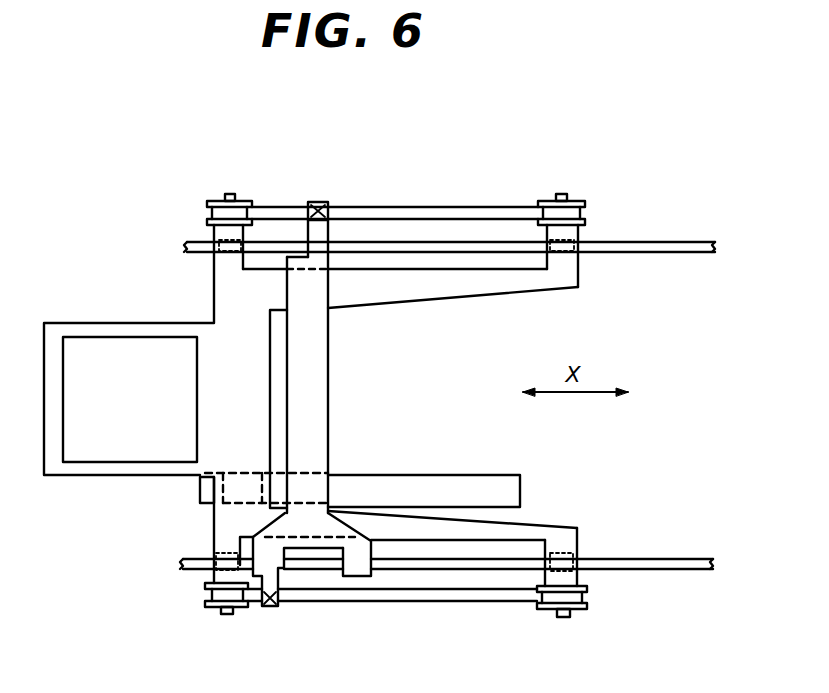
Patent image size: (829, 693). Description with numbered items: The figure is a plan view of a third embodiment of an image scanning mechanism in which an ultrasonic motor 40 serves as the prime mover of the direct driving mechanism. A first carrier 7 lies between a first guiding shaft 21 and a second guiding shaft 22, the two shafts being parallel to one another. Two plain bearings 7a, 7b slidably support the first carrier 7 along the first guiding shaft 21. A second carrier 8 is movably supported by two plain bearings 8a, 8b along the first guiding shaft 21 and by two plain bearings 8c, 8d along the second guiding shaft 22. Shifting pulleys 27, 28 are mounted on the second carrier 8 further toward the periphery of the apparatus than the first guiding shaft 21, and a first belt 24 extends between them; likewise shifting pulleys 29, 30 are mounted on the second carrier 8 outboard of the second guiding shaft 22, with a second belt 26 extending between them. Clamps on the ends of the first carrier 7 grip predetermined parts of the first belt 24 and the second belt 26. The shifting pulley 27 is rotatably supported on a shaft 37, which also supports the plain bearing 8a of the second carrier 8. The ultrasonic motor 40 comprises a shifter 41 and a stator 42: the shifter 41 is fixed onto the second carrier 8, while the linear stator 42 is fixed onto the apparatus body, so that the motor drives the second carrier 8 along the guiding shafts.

The first carrier 7 is at (331, 342).
The plain bearing 7a is at (276, 566).
The plain bearing 7b is at (358, 566).
The second carrier 8 is at (105, 324).
The plain bearing 8a is at (212, 553).
The plain bearing 8b is at (580, 551).
The plain bearing 8c is at (205, 236).
The plain bearing 8d is at (590, 236).
The first guiding shaft 21 is at (690, 558).
The second guiding shaft 22 is at (687, 244).
The first belt 24 is at (453, 603).
The second belt 26 is at (402, 206).
The shifting pulley 27 is at (208, 609).
The shifting pulley 28 is at (545, 611).
The shifting pulley 29 is at (241, 198).
The shifting pulley 30 is at (573, 200).
The shaft 37 is at (228, 616).
The ultrasonic motor 40 is at (493, 463).
The shifter 41 is at (200, 484).
The stator 42 is at (403, 475).